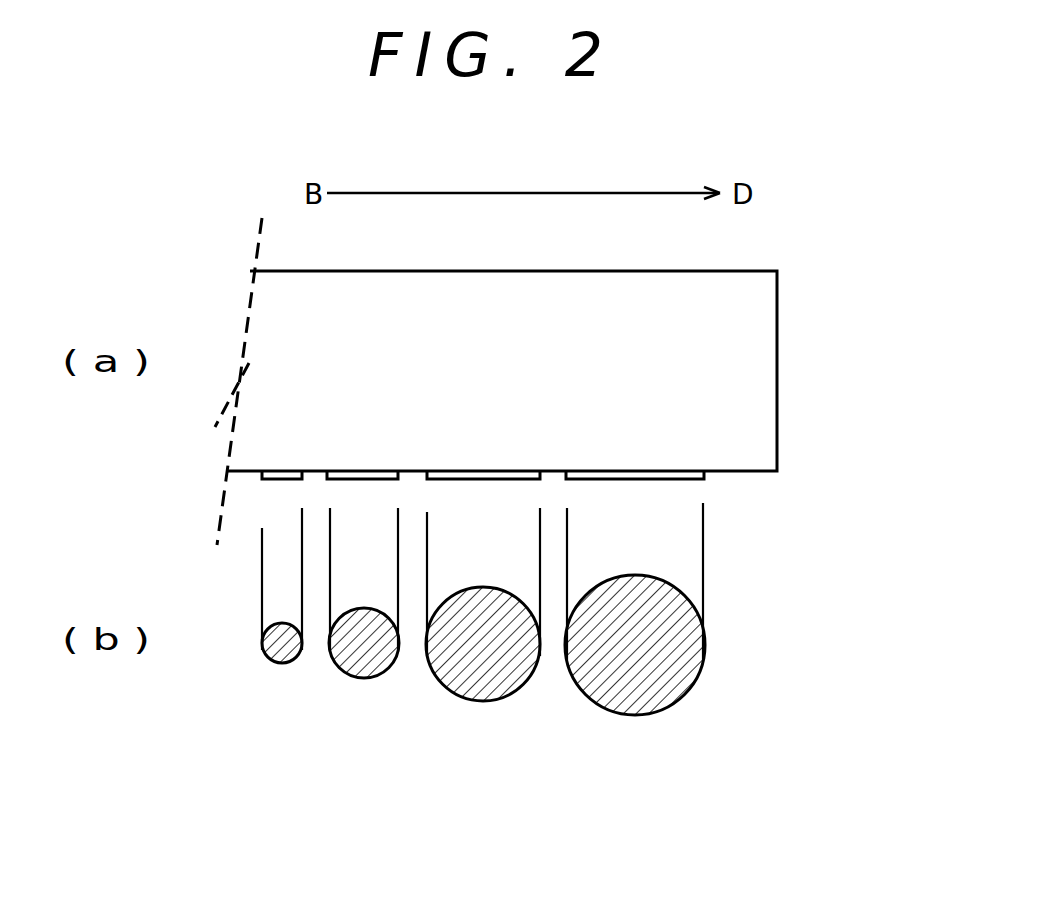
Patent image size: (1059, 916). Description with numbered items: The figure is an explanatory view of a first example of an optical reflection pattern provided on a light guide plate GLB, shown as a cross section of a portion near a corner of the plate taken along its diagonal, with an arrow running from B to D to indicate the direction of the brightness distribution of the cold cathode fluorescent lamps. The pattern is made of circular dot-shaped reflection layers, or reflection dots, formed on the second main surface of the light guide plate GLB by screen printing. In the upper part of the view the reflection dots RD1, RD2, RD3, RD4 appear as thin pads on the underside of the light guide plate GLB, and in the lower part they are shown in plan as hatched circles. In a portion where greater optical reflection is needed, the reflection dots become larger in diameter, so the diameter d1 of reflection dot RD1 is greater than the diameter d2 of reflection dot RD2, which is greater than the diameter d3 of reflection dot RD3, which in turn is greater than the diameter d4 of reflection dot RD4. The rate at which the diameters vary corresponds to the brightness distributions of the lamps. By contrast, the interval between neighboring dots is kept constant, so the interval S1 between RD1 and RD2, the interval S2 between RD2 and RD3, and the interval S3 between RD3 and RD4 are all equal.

The light guide plate GLB is at (765, 319).
The reflection dot RD1 is at (636, 470).
The reflection dot RD2 is at (487, 470).
The reflection dot RD3 is at (364, 470).
The reflection dot RD4 is at (281, 470).
The interval between reflection dots S1 is at (567, 517).
The interval between reflection dots S2 is at (526, 522).
The interval between reflection dots S3 is at (344, 522).
The diameter of reflection dot d1 is at (567, 544).
The diameter of reflection dot d2 is at (526, 549).
The diameter of reflection dot d3 is at (330, 544).
The diameter of reflection dot d4 is at (290, 548).